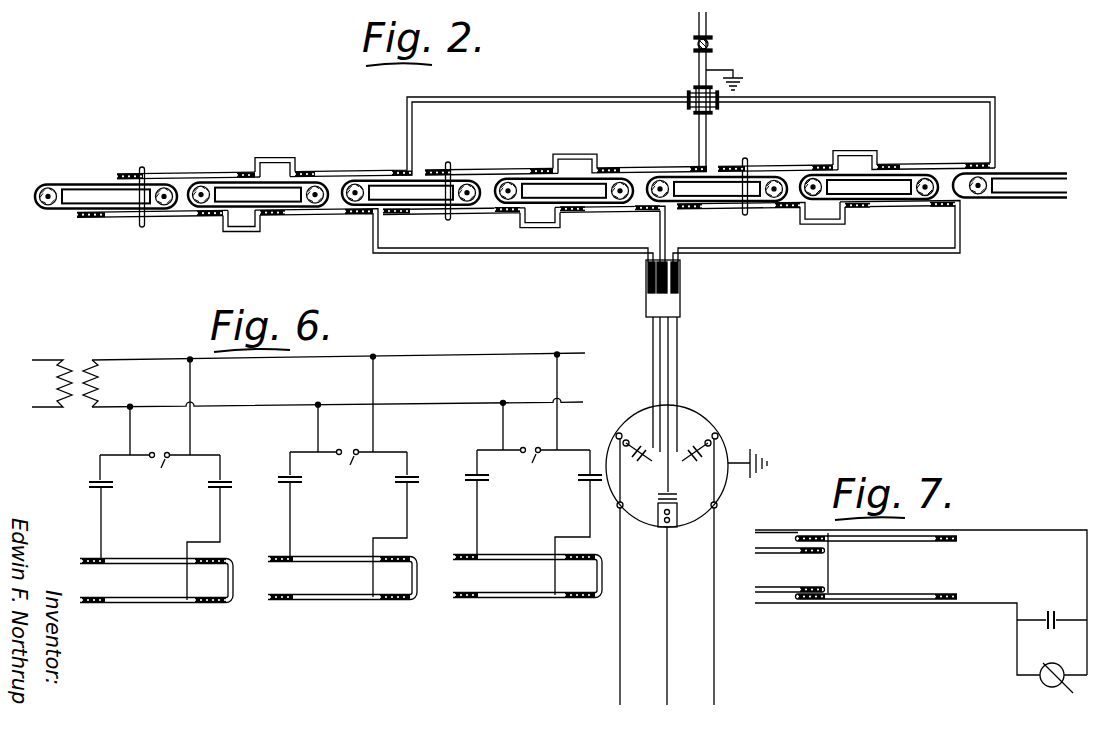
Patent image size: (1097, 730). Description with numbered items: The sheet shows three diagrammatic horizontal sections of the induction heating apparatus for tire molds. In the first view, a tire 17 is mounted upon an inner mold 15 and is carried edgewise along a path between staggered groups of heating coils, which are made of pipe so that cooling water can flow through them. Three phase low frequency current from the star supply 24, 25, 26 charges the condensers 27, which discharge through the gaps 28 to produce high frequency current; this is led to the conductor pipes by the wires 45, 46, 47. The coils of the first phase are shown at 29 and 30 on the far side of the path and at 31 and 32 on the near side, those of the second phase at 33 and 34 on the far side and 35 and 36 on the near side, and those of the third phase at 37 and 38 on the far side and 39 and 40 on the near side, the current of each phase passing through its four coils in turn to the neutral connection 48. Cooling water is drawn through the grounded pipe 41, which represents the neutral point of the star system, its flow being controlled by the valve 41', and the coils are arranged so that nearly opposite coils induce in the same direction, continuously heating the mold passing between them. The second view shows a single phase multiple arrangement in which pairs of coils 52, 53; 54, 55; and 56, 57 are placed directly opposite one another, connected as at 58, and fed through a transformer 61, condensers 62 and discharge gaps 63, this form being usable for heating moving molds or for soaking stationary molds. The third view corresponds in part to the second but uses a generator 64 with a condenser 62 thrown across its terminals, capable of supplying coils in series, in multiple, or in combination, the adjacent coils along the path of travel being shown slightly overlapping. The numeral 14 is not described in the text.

In FIG. 2, the cell 14 is at (43, 205).
In FIG. 2, the mold 15 is at (55, 190).
In FIG. 2, the tire 17 is at (199, 208).
In FIG. 2, the three phase star supply 24 is at (621, 672).
In FIG. 2, the three phase star supply 25 is at (668, 618).
In FIG. 2, the three phase star supply 26 is at (716, 660).
In FIG. 2, the condenser 27 is at (668, 472).
In FIG. 2, the discharge gap 28 is at (624, 432).
In FIG. 2, the coil 29 is at (174, 172).
In FIG. 2, the coil 30 is at (324, 171).
In FIG. 2, the coil 31 is at (166, 218).
In FIG. 2, the coil 32 is at (300, 216).
In FIG. 2, the coil 33 is at (494, 169).
In FIG. 2, the coil 34 is at (613, 167).
In FIG. 2, the coil 35 is at (479, 211).
In FIG. 2, the coil 36 is at (606, 210).
In FIG. 2, the coil 37 is at (763, 167).
In FIG. 2, the coil 38 is at (896, 167).
In FIG. 2, the coil 39 is at (717, 207).
In FIG. 2, the coil 40 is at (878, 205).
In FIG. 2, the grounded pipe 41 is at (733, 92).
In FIG. 2, the valve 41' is at (724, 33).
In FIG. 2, the wire 45 is at (653, 378).
In FIG. 2, the wire 46 is at (668, 385).
In FIG. 2, the wire 47 is at (680, 385).
In FIG. 2, the neutral connection 48 is at (695, 95).
In FIG. 6, the coil 52 is at (134, 558).
In FIG. 6, the coil 53 is at (141, 602).
In FIG. 6, the coil 54 is at (339, 557).
In FIG. 6, the coil 55 is at (336, 600).
In FIG. 6, the coil 56 is at (523, 556).
In FIG. 6, the coil 57 is at (528, 598).
In FIG. 6, the connection 58 is at (236, 576).
In FIG. 6, the transformer 61 is at (77, 364).
In FIG. 6, the condenser 62 is at (101, 480).
In FIG. 7, the condenser 62 is at (1051, 612).
In FIG. 6, the discharge gap 63 is at (345, 472).
In FIG. 7, the generator 64 is at (1064, 684).